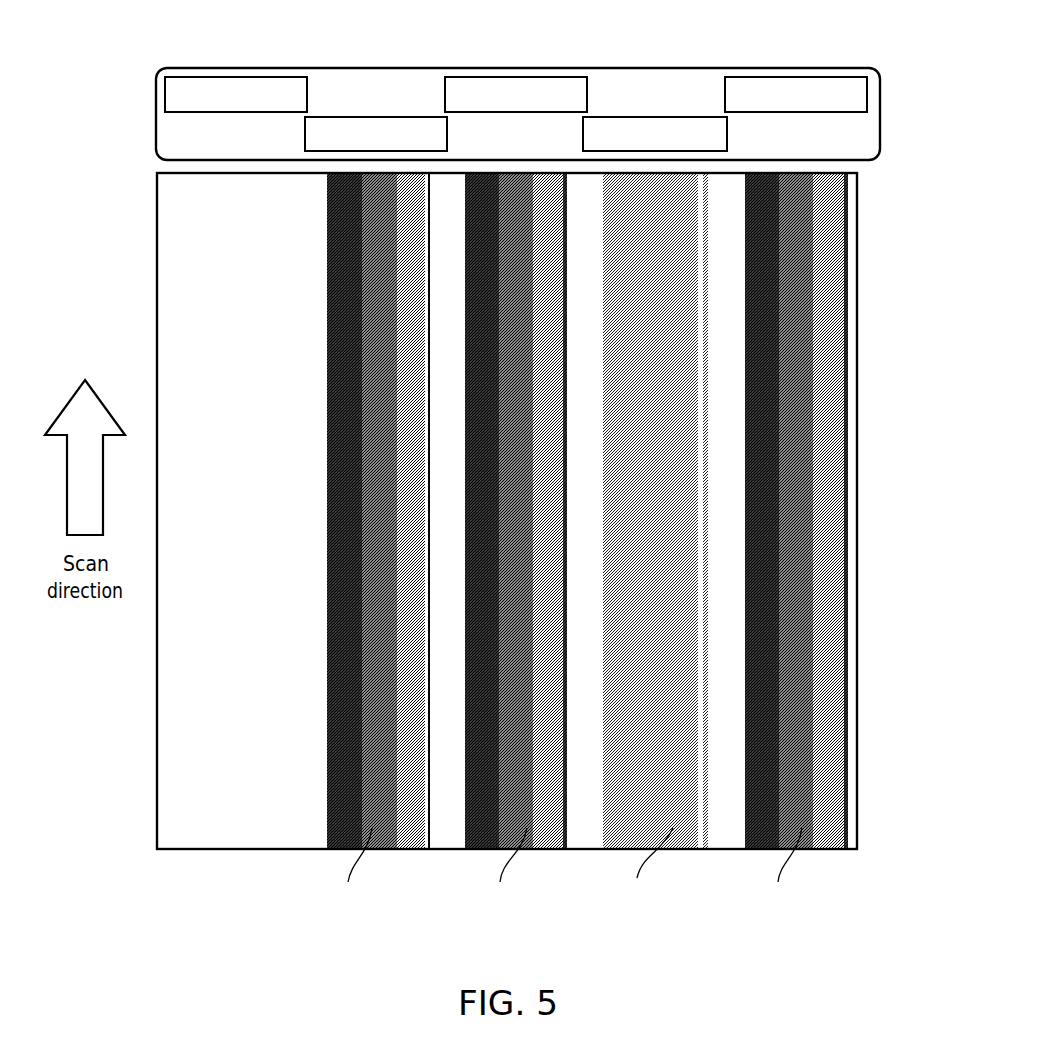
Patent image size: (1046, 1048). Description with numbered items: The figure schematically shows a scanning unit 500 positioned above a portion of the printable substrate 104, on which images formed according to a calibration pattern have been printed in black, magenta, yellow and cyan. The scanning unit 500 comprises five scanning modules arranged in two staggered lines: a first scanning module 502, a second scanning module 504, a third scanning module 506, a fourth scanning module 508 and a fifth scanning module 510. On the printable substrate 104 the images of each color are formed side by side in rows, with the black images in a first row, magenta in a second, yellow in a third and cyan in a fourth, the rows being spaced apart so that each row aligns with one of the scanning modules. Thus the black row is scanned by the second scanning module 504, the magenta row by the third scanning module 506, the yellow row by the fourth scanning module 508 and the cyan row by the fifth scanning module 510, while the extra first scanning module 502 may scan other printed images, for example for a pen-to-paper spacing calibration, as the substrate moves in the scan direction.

The scanning unit 500 is at (880, 117).
The scanning module #1 502 is at (227, 73).
The scanning module #2 504 is at (380, 117).
The scanning module #3 506 is at (510, 73).
The scanning module #4 508 is at (660, 117).
The scanning module #5 510 is at (797, 73).
The printable substrate 104 is at (859, 284).